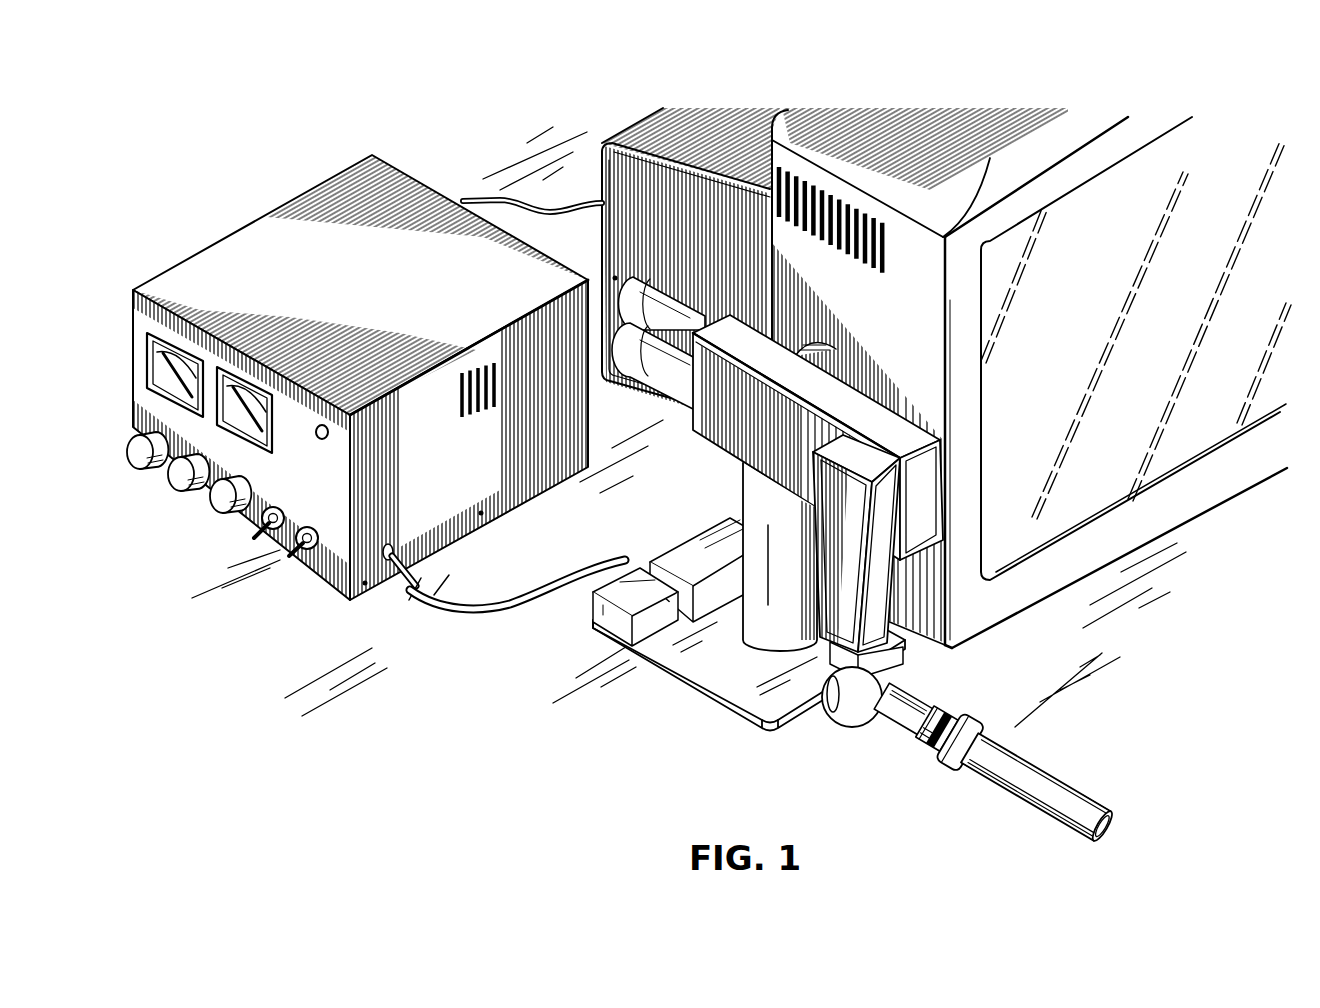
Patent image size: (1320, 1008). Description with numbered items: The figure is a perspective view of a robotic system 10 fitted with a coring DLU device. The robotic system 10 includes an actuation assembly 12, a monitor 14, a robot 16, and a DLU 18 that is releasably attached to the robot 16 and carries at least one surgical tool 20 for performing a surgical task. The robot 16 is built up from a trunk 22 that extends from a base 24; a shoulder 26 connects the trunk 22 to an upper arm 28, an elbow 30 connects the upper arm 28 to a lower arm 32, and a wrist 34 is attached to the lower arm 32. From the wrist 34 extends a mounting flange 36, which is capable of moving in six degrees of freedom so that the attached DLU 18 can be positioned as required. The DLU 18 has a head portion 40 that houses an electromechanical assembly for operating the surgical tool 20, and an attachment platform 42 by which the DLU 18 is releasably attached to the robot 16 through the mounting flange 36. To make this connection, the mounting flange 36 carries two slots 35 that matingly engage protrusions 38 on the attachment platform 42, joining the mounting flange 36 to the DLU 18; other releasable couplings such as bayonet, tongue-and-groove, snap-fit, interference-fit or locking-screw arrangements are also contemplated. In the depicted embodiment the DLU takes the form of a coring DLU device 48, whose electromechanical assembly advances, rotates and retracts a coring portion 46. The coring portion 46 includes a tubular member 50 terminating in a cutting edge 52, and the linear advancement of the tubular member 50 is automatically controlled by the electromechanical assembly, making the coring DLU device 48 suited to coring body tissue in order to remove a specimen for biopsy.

The robotic system 10 is at (432, 113).
The actuation assembly 12 is at (313, 162).
The monitor 14 is at (1083, 118).
The robot 16 is at (749, 661).
The DLU 18 is at (1065, 802).
The surgical tool 20 is at (1088, 801).
The trunk 22 is at (745, 497).
The base 24 is at (797, 722).
The shoulder 26 is at (828, 358).
The upper arm 28 is at (954, 494).
The elbow 30 is at (920, 497).
The lower arm 32 is at (940, 642).
The wrist 34 is at (886, 673).
The slots 35 is at (893, 727).
The mounting flange 36 is at (891, 741).
The protrusions 38 is at (882, 734).
The head portion 40 is at (974, 729).
The attachment platform 42 is at (913, 744).
The coring portion 46 is at (1119, 804).
The coring DLU device 48 is at (945, 780).
The tubular member 50 is at (1139, 833).
The cutting edge 52 is at (1097, 846).